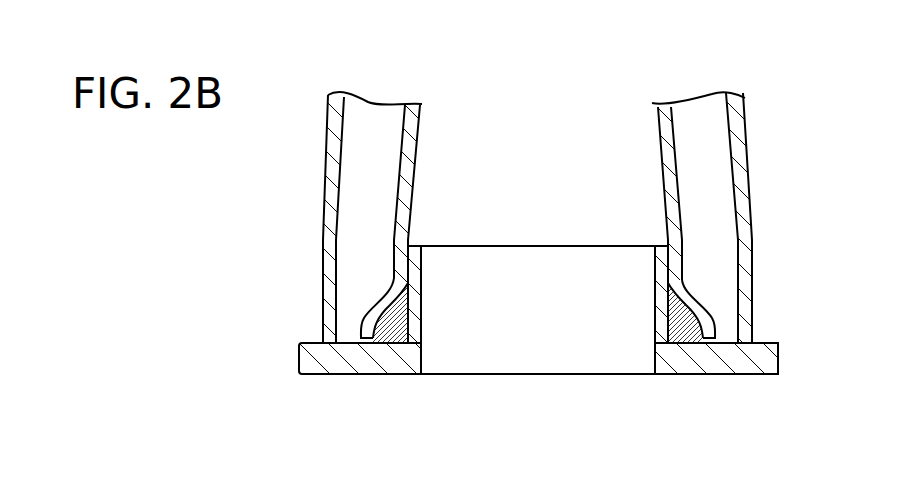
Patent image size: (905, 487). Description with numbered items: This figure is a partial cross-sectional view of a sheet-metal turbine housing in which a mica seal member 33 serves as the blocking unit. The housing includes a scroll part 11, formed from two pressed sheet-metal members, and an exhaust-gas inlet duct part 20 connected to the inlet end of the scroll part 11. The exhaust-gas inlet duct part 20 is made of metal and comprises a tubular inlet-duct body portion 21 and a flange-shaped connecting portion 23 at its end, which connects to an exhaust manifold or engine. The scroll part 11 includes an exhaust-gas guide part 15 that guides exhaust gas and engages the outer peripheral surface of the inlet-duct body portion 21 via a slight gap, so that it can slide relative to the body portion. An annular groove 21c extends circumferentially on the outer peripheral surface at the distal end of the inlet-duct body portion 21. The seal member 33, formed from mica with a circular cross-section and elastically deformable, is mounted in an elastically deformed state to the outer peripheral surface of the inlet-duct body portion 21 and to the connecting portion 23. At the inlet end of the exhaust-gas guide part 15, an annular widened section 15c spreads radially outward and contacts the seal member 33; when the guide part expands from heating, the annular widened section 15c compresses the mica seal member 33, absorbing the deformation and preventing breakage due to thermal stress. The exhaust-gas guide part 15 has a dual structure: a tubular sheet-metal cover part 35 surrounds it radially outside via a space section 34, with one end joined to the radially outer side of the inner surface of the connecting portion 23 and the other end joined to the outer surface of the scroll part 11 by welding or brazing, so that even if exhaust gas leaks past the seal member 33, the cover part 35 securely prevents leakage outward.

The scroll part 11 is at (773, 110).
The exhaust-gas guide part 15 is at (676, 157).
The annular widened section 15c is at (700, 300).
The exhaust-gas inlet duct part 20 is at (784, 342).
The inlet-duct body portion 21 is at (413, 301).
The annular groove 21c is at (672, 272).
The connecting portion 23 is at (368, 367).
The seal member 33 is at (685, 343).
The space section 34 is at (707, 182).
The cover part 35 is at (752, 240).